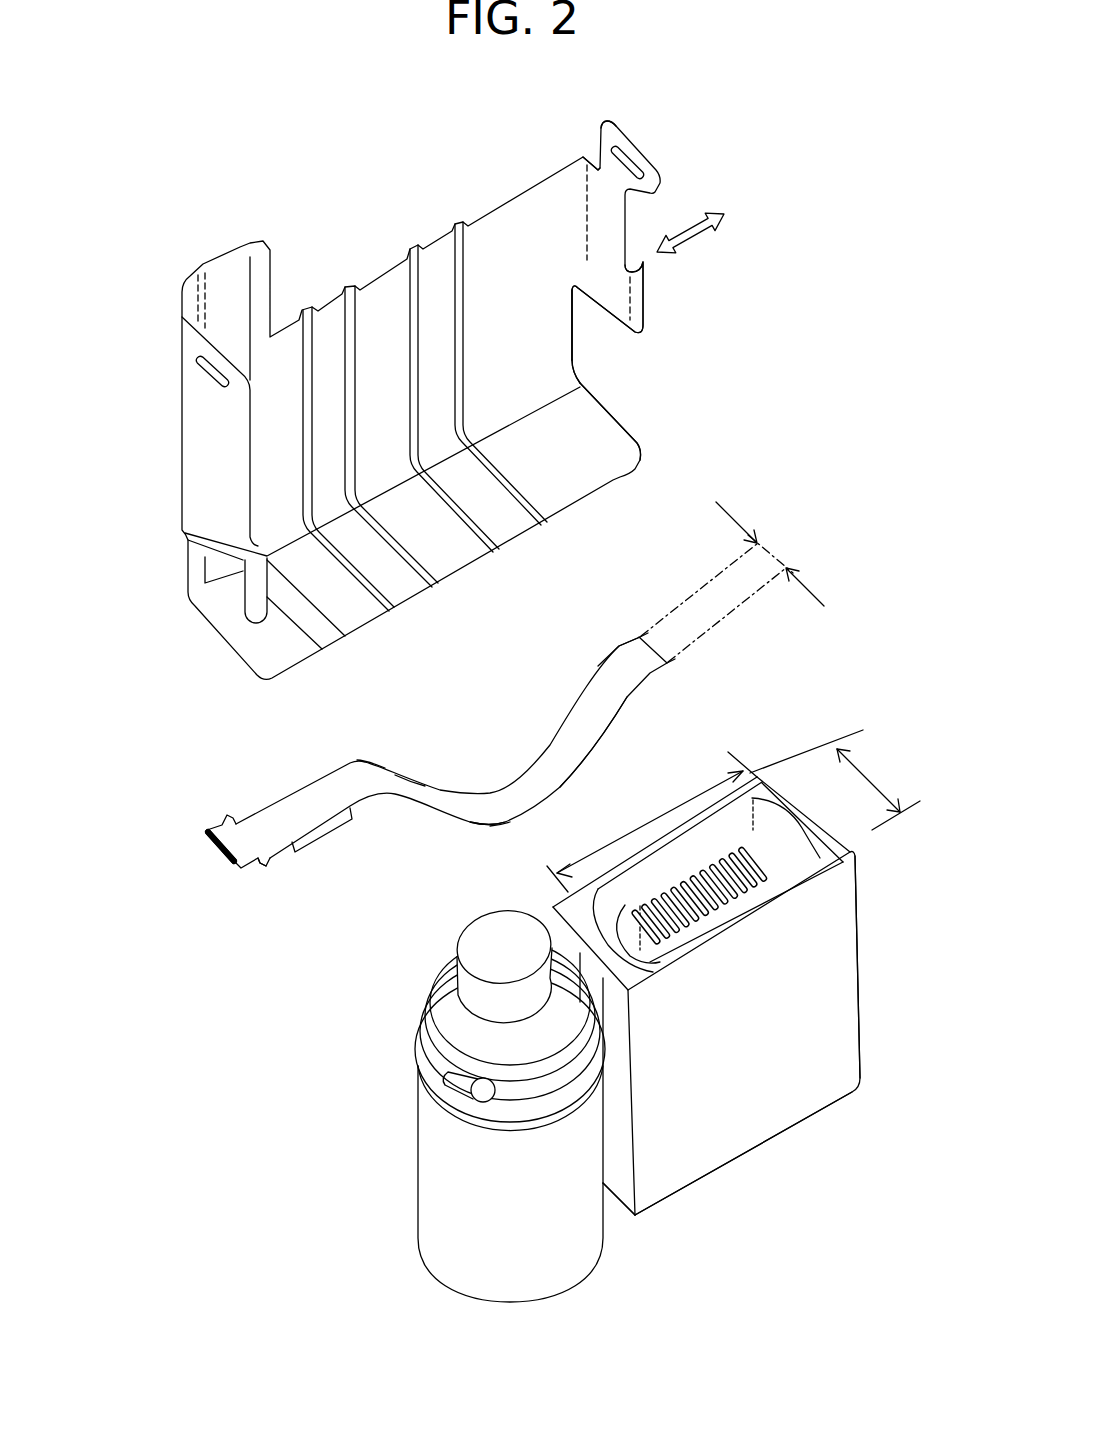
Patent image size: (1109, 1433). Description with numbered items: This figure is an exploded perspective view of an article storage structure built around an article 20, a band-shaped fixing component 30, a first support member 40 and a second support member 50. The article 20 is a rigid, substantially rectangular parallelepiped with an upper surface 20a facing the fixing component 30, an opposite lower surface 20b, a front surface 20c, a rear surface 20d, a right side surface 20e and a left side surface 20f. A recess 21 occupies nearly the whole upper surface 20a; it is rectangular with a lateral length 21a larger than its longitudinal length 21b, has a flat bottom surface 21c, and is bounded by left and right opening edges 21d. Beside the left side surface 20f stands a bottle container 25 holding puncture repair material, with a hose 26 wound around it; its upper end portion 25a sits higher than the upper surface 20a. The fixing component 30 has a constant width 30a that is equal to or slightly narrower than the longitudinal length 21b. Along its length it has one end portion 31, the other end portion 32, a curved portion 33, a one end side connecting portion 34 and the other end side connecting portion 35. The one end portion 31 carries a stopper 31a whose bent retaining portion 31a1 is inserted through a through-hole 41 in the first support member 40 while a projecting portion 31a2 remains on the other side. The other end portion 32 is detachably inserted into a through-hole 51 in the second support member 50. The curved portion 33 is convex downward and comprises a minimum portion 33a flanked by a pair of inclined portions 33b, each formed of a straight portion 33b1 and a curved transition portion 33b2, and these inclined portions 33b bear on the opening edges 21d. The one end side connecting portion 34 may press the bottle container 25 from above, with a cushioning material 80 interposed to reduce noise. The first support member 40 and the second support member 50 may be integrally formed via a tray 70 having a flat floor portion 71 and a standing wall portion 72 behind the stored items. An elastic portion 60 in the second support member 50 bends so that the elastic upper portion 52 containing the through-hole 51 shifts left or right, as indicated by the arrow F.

The article 20 is at (688, 1192).
The upper surface 20a is at (770, 777).
The lower surface 20b is at (807, 1120).
The front surface 20c is at (733, 1034).
The rear surface 20d is at (752, 778).
The right side surface 20e is at (858, 1032).
The left side surface 20f is at (613, 1193).
The recess 21 is at (551, 907).
The lateral length 21a is at (655, 813).
The longitudinal length 21b is at (886, 797).
The bottom surface 21c is at (743, 884).
The opening edges 21d is at (798, 821).
The bottle container 25 is at (559, 1292).
The upper end portion 25a is at (503, 942).
The hose 26 is at (433, 1027).
The fixing component 30 is at (440, 809).
The width 30a is at (776, 550).
The one end portion 31 is at (242, 836).
The stopper 31a is at (178, 874).
The retaining portion 31a1 is at (213, 848).
The projecting portion 31a2 is at (263, 870).
The other end portion 32 is at (655, 666).
The curved portion 33 is at (496, 800).
The minimum portion 33a is at (508, 823).
The inclined portions 33b is at (585, 628).
The straight portion 33b1 is at (421, 774).
The transition portion 33b2 is at (362, 765).
The one end side connecting portion 34 is at (307, 792).
The other end side connecting portion 35 is at (623, 662).
The first support member 40 is at (208, 488).
The through-hole 41 is at (208, 373).
The second support member 50 is at (647, 302).
The through-hole 51 is at (625, 166).
The elastic upper portion 52 is at (606, 123).
The elastic portion 60 is at (598, 168).
The tray 70 is at (674, 352).
The floor portion 71 is at (555, 442).
The standing wall portion 72 is at (550, 348).
The cushioning material 80 is at (332, 826).
The arrow F is at (690, 226).